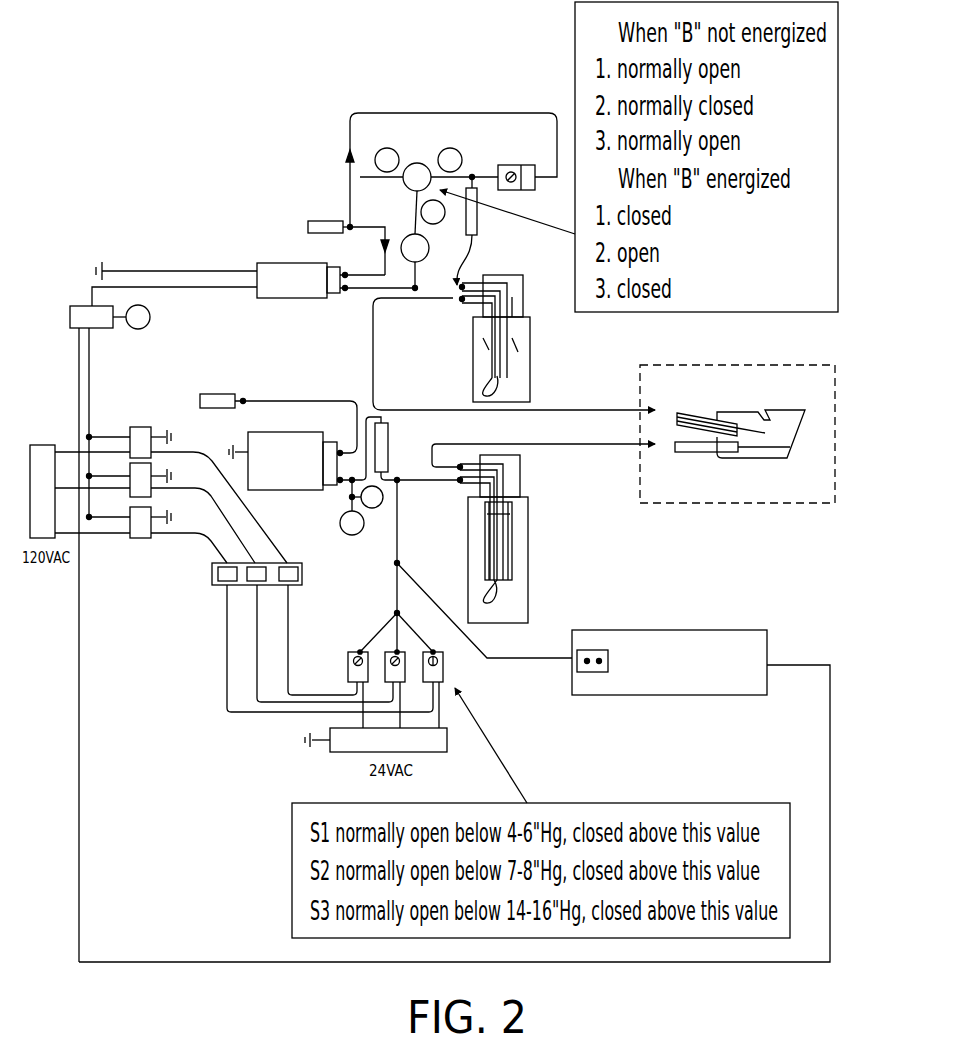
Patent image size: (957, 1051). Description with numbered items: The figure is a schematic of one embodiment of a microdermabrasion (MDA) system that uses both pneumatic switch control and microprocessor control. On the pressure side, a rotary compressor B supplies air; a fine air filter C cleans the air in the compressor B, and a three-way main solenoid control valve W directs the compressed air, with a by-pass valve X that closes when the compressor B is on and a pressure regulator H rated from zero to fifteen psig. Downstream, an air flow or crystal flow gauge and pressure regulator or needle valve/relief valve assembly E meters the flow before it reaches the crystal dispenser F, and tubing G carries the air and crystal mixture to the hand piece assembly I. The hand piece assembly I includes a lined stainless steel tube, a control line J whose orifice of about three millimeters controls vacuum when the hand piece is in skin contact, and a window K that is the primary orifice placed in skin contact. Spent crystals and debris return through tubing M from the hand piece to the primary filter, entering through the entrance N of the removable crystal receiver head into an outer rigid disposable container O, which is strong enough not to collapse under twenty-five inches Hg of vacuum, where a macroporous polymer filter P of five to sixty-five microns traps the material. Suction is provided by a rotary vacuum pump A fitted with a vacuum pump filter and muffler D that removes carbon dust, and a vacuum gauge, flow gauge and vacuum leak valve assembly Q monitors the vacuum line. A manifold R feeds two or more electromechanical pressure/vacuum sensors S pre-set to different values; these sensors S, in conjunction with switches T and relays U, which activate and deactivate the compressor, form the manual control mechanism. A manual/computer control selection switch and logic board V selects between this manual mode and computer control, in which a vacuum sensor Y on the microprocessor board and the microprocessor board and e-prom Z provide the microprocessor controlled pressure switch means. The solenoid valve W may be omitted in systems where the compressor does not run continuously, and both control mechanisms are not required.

The vacuum pump A is at (286, 461).
The compressor B is at (253, 284).
The 0.2 micron air filter C is at (329, 210).
The vacuum pump filter and muffler D is at (278, 406).
The air flow or crystal flow gauge and pressure regulator or needle valve/relief val E is at (479, 231).
The crystal dispenser F is at (506, 338).
The tubing carrying air/crystal mixture G is at (514, 354).
The pressure regulator H is at (427, 262).
The hand piece assembly I is at (737, 419).
The control line J is at (721, 406).
The window K is at (746, 436).
The tubing for handpiece to primary filter M is at (543, 461).
The entrance to removable crystal receiver head N is at (398, 450).
The outer rigid disposable container O is at (509, 539).
The macroporous polymer filter P is at (515, 558).
The vacuum gauge, flow gauge and vacuum leak valve assembly Q is at (367, 515).
The manifold R is at (465, 569).
The pressure/vacuum sensors S is at (401, 690).
The switches T is at (322, 636).
The relays U is at (187, 497).
The manual/computer control selection switch and logic board V is at (110, 633).
The 3-way main solenoid control valve W is at (429, 176).
The by-pass valve X is at (520, 154).
The vacuum sensor on microprocessor board Y is at (604, 666).
The microprocessor board and e-prom Z is at (454, 796).